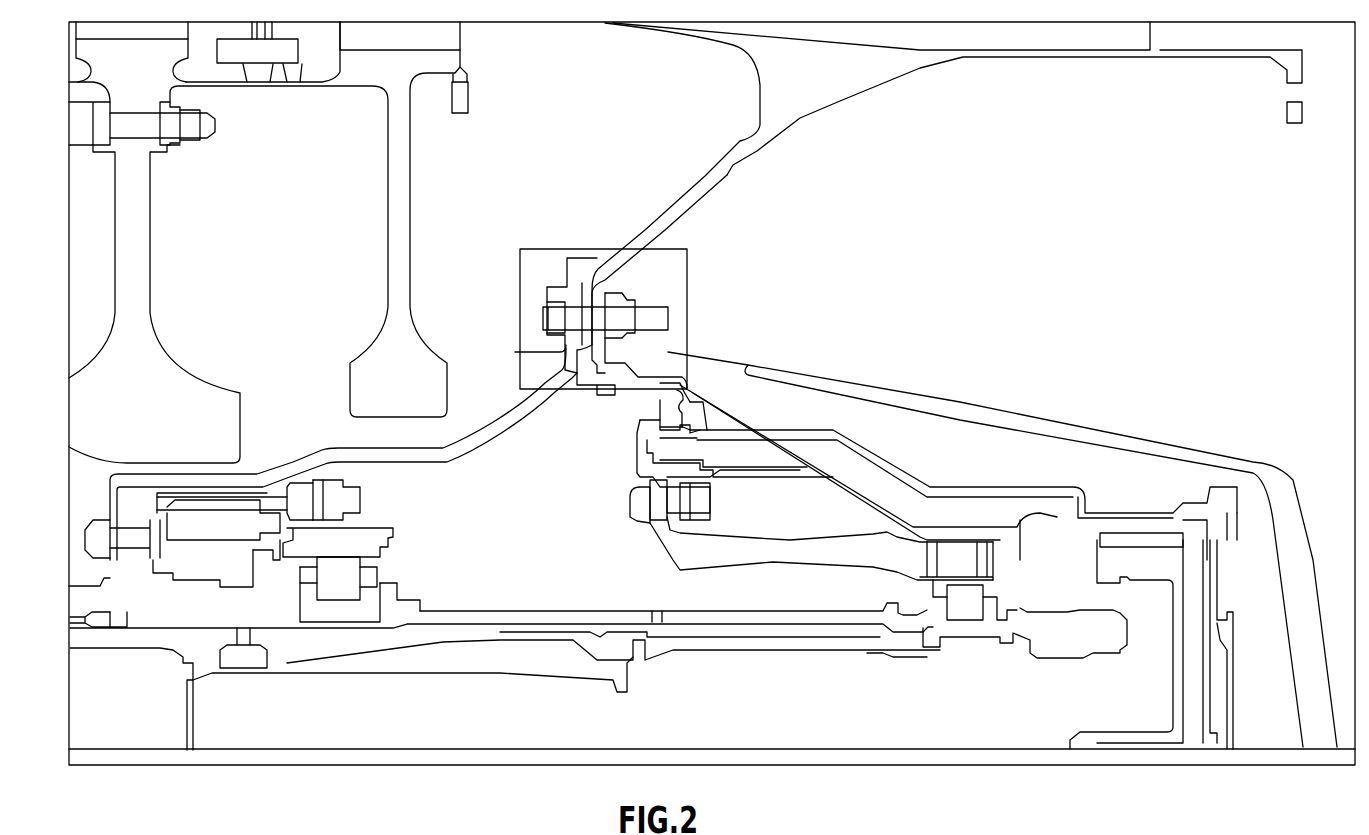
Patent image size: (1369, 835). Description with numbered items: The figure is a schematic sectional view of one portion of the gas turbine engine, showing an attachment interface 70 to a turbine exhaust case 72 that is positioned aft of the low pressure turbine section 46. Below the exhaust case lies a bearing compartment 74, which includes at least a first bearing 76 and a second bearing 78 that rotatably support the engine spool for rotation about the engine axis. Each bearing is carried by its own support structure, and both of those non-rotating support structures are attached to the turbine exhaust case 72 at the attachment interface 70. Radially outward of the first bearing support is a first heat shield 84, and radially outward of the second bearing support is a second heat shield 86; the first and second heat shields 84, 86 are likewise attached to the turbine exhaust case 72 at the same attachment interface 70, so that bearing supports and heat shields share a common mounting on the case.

The low pressure turbine section 46 is at (536, 146).
The turbine exhaust case 72 is at (670, 203).
The attachment interface 70 is at (717, 313).
The first heat shield 84 is at (483, 420).
The second heat shield 86 is at (660, 353).
The bearing compartment 74 is at (589, 566).
The first bearing 76 is at (333, 580).
The second bearing 78 is at (963, 602).